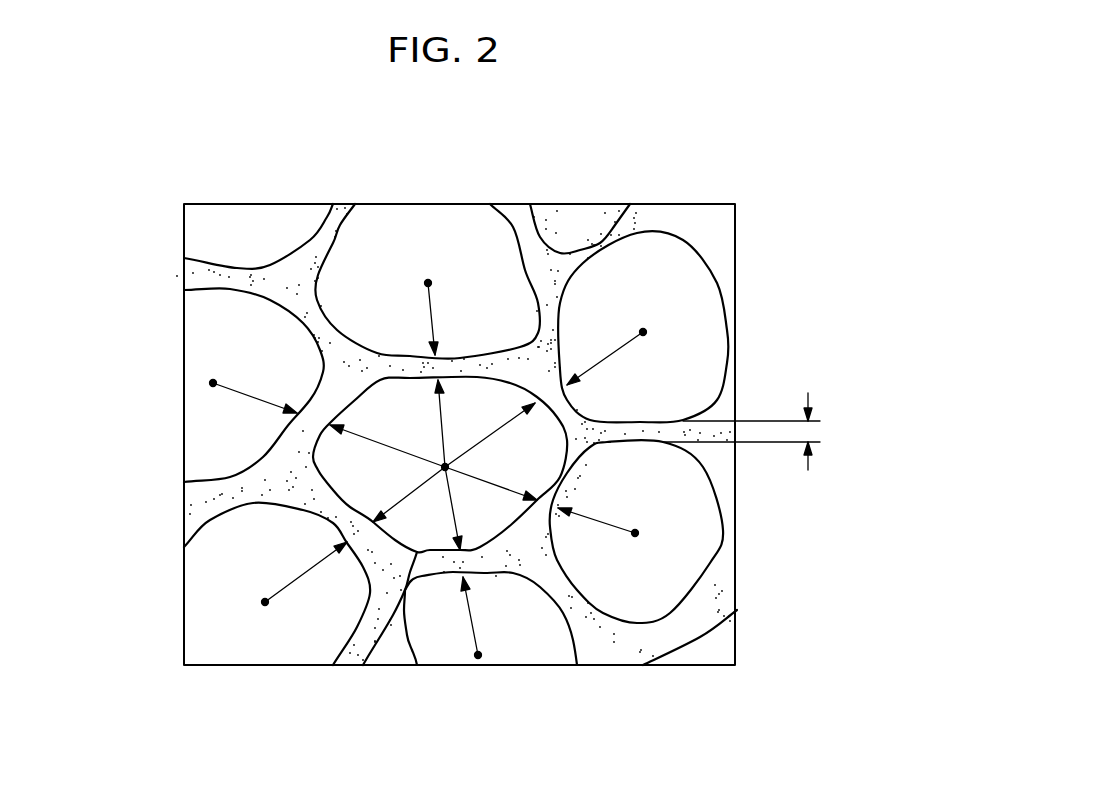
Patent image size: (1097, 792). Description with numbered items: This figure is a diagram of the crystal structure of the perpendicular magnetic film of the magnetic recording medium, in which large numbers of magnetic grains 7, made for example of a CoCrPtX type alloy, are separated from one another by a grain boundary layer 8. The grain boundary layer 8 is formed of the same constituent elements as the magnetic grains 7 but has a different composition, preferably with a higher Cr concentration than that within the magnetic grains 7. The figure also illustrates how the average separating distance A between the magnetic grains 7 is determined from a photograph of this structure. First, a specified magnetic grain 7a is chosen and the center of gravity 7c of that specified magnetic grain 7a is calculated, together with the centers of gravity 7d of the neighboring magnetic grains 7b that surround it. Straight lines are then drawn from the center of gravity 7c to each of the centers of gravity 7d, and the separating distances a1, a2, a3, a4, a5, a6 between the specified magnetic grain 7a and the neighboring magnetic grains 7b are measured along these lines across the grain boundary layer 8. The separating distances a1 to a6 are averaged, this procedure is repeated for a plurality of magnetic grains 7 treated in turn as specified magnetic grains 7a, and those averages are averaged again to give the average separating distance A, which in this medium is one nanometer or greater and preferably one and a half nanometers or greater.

The magnetic grains 7 is at (650, 247).
The specified magnetic grain 7a is at (417, 665).
The neighboring magnetic grains 7b is at (458, 210).
The center of gravity of the specified magnetic grain 7c is at (450, 457).
The centers of gravity of the neighboring magnetic grains 7d is at (428, 283).
The grain boundary layer 8 is at (190, 503).
The separating distance a1 is at (310, 413).
The separating distance a2 is at (450, 358).
The separating distance a3 is at (567, 398).
The separating distance a4 is at (553, 497).
The separating distance a5 is at (475, 565).
The separating distance a6 is at (333, 527).
The average separating distance A is at (756, 431).